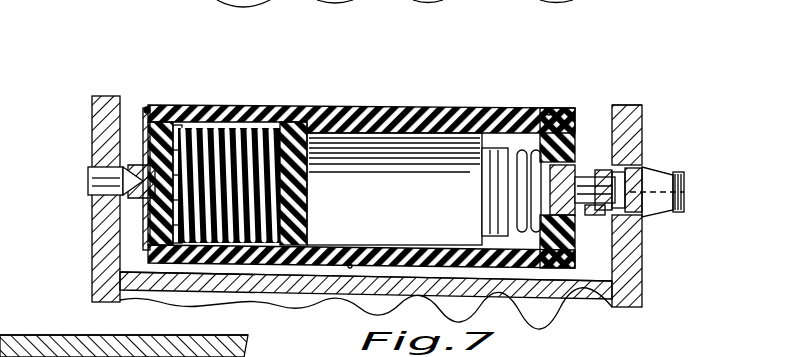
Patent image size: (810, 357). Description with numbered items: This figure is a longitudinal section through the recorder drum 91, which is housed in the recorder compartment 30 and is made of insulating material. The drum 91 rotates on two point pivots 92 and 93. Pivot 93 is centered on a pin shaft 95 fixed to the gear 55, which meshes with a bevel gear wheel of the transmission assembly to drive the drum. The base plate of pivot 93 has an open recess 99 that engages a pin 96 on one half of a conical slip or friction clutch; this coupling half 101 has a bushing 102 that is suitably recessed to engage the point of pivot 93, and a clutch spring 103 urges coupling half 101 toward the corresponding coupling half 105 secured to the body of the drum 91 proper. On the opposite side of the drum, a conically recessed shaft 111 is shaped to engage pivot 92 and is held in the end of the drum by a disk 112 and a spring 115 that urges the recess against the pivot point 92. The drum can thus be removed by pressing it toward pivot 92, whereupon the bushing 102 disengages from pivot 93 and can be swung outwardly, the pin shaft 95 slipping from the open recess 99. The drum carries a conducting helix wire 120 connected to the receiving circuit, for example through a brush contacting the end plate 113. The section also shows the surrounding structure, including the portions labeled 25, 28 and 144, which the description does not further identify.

The base plate 25 is at (13, 347).
The bottom plate 28 is at (577, 290).
The recorder compartment 30 is at (600, 265).
The gear 55 is at (676, 170).
The recorder drum 91 is at (393, 108).
The point pivot 92 is at (98, 175).
The point pivot 93 is at (603, 222).
The pin shaft 95 is at (640, 140).
The pin 96 is at (601, 165).
The recess 99 is at (609, 165).
The coupling half 101 is at (510, 89).
The bushing 102 is at (585, 165).
The clutch spring 103 is at (531, 113).
The coupling half 105 is at (487, 110).
The conically recessed shaft 111 is at (157, 110).
The disk 112 is at (213, 87).
The end plate 113 is at (143, 137).
The spring 115 is at (298, 118).
The helix wire 120 is at (147, 110).
The plate edge 144 is at (87, 356).